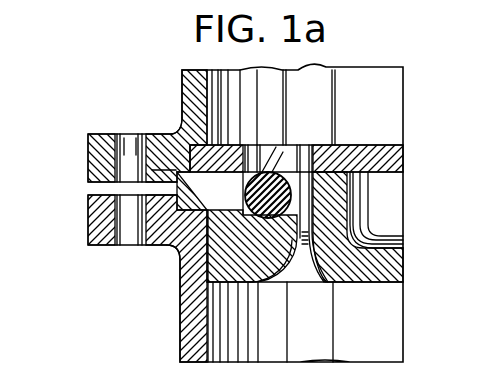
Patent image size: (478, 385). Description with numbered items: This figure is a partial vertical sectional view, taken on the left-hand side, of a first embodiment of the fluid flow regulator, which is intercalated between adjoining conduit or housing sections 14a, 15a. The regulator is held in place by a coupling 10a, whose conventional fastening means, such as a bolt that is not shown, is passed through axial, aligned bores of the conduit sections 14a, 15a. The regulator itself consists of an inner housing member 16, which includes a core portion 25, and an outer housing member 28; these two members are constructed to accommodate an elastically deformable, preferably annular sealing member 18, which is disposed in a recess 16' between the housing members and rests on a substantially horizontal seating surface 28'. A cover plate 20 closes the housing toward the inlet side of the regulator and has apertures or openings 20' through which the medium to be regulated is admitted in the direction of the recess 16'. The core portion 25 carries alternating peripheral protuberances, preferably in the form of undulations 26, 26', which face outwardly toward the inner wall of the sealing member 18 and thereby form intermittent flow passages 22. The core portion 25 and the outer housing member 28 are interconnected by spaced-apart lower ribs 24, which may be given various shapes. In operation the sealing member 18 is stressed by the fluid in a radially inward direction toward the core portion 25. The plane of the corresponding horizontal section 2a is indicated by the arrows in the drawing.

The coupling 10a is at (108, 254).
The conduit or housing section 14a is at (88, 134).
The conduit or housing section 15a is at (95, 212).
The horizontal section 2a is at (159, 152).
The cover plate 20 is at (290, 141).
The apertures or openings 20' is at (311, 136).
The recess 16' is at (275, 107).
The inner housing member 16 is at (305, 249).
The sealing member 18 is at (269, 172).
The intermittent flow passages 22 is at (320, 214).
The lower ribs 24 is at (309, 262).
The core portion 25 is at (395, 272).
The undulations 26 is at (374, 210).
The protuberances 26' is at (395, 204).
The outer housing member 28 is at (213, 270).
The seating surface 28' is at (216, 227).